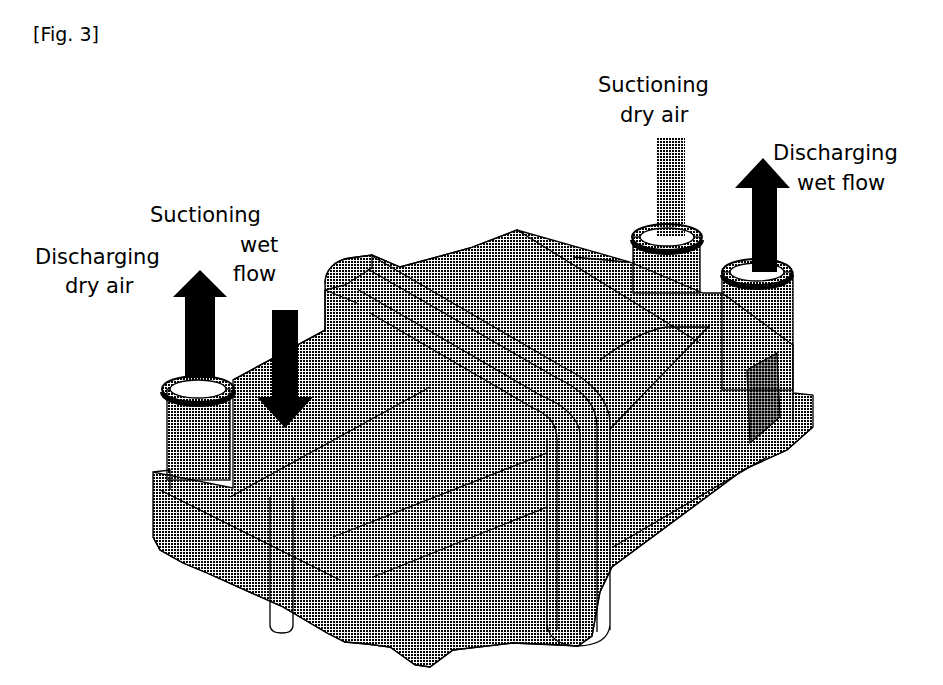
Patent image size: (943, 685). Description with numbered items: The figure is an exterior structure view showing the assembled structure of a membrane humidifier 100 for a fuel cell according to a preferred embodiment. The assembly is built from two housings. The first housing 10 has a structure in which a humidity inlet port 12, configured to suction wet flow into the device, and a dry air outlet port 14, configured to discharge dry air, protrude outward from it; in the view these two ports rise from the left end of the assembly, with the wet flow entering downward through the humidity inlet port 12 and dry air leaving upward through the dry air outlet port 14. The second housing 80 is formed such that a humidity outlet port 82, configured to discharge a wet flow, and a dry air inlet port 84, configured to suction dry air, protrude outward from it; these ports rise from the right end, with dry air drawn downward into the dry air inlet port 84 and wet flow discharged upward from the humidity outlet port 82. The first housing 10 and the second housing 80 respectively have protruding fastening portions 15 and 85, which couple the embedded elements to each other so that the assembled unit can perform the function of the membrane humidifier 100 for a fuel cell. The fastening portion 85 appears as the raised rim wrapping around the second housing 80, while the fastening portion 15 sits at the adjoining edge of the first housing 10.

The first housing 10 is at (332, 332).
The humidity inlet port 12 is at (207, 573).
The dry air outlet port 14 is at (163, 413).
The fastening portion 15 is at (357, 263).
The second housing 80 is at (503, 257).
The humidity outlet port 82 is at (800, 347).
The dry air inlet port 84 is at (703, 233).
The fastening portion 85 is at (398, 268).
The membrane humidifier for a fuel cell 100 is at (826, 652).